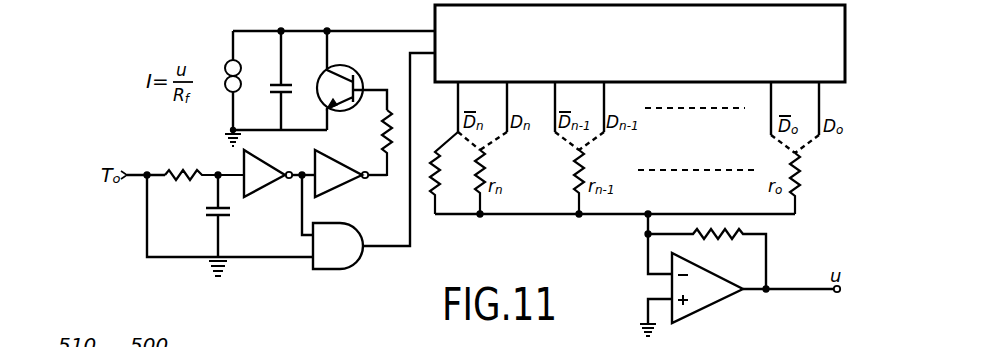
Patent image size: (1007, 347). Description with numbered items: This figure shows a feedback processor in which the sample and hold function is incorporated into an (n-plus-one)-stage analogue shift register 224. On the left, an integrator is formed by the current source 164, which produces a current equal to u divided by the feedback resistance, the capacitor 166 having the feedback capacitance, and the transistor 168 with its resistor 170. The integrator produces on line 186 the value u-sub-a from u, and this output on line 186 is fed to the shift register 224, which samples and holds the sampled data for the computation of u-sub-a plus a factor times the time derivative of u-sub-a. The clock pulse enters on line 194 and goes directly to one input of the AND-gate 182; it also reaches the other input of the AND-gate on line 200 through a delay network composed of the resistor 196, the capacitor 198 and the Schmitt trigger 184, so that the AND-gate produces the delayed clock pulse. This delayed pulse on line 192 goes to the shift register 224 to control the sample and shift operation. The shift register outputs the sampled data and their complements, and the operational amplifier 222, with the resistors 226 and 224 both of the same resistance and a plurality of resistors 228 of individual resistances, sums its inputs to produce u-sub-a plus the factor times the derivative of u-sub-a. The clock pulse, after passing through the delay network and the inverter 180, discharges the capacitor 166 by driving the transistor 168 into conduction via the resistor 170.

The current source 164 is at (227, 62).
The capacitor 166 is at (272, 86).
The transistor 168 is at (349, 66).
The resistor 170 is at (382, 132).
The inverter 180 is at (343, 190).
The AND-gate 182 is at (338, 270).
The Schmitt trigger 184 is at (270, 189).
The line 186 is at (360, 31).
The line 192 is at (381, 248).
The line 194 is at (147, 170).
The resistor 196 is at (183, 167).
The capacitor 198 is at (205, 210).
The line 200 is at (302, 171).
The operational amplifier 222 is at (712, 306).
The (n+1)-stage analogue shift register 224 is at (846, 51).
The resistor 226 is at (442, 194).
The resistors 228 is at (801, 187).